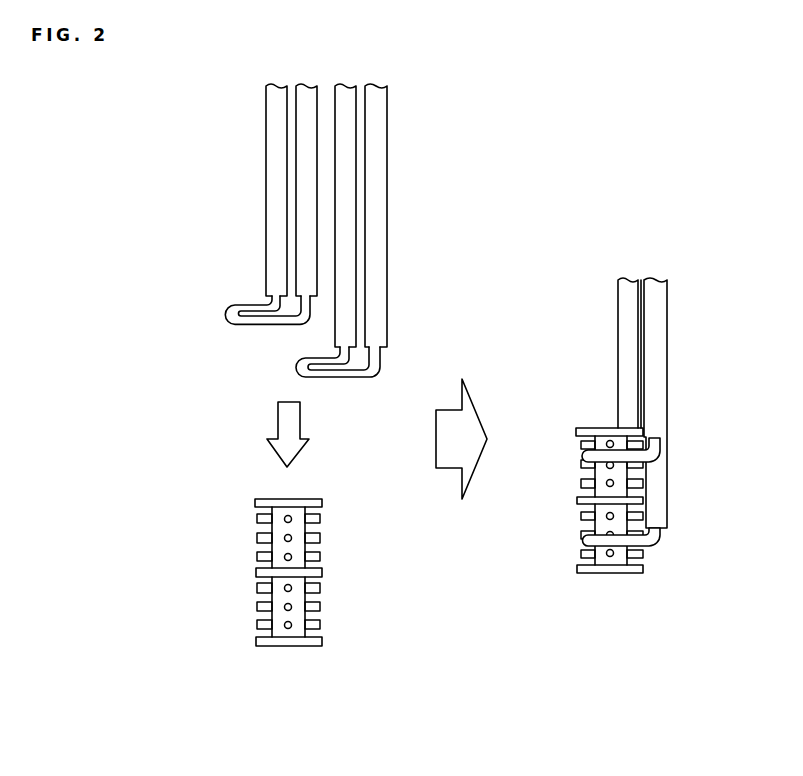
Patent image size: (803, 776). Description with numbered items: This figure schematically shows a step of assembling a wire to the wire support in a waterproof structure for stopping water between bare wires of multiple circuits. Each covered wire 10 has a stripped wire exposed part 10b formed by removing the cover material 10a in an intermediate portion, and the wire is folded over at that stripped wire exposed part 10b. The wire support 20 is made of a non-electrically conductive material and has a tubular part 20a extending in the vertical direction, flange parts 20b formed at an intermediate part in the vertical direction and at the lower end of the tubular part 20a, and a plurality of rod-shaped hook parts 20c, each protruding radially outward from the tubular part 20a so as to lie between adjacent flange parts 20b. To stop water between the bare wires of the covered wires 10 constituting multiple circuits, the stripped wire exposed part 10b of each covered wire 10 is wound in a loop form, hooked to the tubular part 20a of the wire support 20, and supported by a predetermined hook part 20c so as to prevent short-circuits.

The covered wire 10 is at (455, 320).
The cover material 10a is at (306, 110).
The stripped wire exposed part 10b is at (225, 312).
The wire support 20 is at (458, 538).
The tubular part 20a is at (278, 633).
The flange parts 20b is at (258, 503).
The hook parts 20c is at (292, 515).